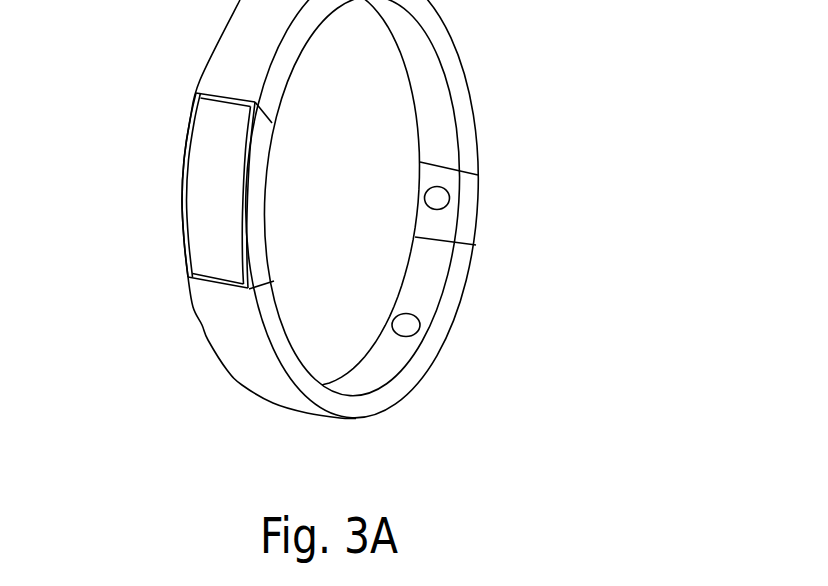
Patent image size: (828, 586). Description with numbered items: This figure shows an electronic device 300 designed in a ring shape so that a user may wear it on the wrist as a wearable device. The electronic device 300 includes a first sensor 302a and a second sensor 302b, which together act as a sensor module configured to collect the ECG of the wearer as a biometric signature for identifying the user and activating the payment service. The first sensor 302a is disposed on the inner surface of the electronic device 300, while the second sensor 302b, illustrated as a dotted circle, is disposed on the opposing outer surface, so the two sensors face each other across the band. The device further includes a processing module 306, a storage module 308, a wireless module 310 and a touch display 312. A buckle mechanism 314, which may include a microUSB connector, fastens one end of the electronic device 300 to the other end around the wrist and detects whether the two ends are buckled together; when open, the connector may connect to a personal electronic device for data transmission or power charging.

The electronic device 300 is at (358, 477).
The first sensor 302a is at (420, 322).
The second sensor 302b is at (449, 194).
The processing module 306 is at (220, 312).
The storage module 308 is at (242, 355).
The wireless module 310 is at (365, 402).
The touch display 312 is at (203, 162).
The buckle mechanism 314 is at (438, 175).